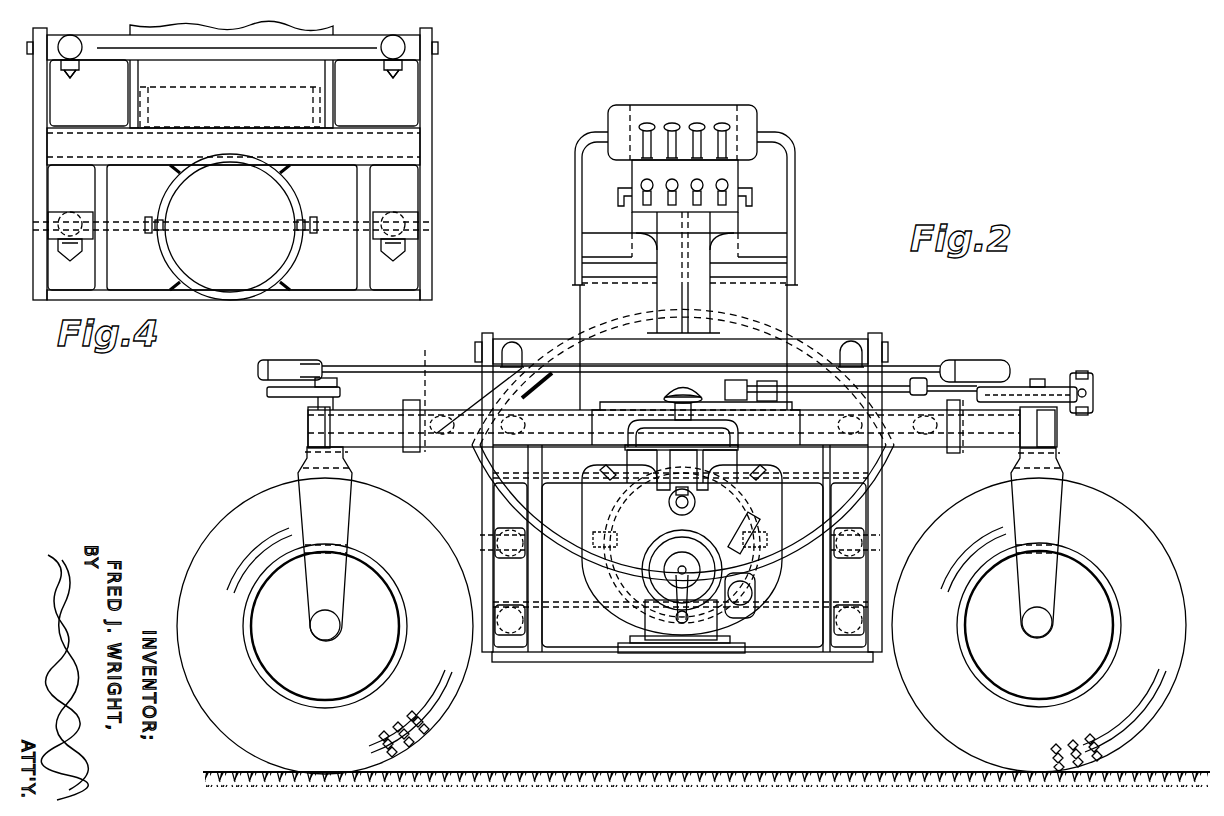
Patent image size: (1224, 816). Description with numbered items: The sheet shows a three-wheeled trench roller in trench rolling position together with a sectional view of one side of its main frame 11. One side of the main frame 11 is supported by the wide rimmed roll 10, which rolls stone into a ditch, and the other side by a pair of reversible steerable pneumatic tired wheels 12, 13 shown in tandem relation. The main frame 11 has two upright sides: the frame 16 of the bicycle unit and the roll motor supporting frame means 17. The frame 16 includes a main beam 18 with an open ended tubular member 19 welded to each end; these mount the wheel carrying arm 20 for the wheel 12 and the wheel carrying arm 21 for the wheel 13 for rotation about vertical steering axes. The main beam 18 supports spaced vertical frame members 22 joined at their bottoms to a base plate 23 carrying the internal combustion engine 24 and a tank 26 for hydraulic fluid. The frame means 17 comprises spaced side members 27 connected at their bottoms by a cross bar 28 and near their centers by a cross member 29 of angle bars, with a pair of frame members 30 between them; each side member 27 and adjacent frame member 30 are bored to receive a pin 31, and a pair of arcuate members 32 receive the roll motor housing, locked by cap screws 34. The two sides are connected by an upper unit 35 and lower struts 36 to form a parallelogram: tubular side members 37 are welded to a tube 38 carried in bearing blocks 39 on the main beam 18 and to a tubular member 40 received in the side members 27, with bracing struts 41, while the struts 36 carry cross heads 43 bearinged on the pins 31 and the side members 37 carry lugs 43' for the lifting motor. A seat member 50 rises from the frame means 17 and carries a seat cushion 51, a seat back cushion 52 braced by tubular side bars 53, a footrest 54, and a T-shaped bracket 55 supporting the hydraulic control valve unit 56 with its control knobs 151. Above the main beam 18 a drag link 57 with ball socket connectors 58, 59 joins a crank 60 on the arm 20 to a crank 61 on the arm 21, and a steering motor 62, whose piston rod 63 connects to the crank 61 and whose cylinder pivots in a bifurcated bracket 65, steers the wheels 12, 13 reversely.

In FIG. 2, the wide rimmed roll 10 is at (458, 474).
In FIG. 2, the main frame 11 is at (1062, 428).
In FIG. 2, the pneumatic tired wheel 12 is at (325, 626).
In FIG. 2, the pneumatic tired wheel 13 is at (1039, 625).
In FIG. 2, the frame of the bicycle unit 16 is at (917, 450).
In FIG. 4, the roll motor supporting frame means 17 is at (440, 141).
In FIG. 2, the main beam 18 is at (377, 422).
In FIG. 2, the open ended tubular member 19 is at (322, 428).
In FIG. 2, the wheel carrying arm 20 is at (325, 544).
In FIG. 2, the wheel carrying arm 21 is at (1037, 543).
In FIG. 2, the vertical frame member 22 is at (680, 565).
In FIG. 2, the base plate 23 is at (690, 662).
In FIG. 2, the internal combustion engine 24 is at (770, 503).
In FIG. 2, the tank for hydraulic fluid 26 is at (768, 587).
In FIG. 4, the side member 27 is at (430, 201).
In FIG. 2, the side member 27 is at (487, 342).
In FIG. 4, the cross bar 28 is at (226, 297).
In FIG. 4, the cross member 29 is at (233, 146).
In FIG. 4, the frame member 30 is at (103, 264).
In FIG. 4, the pin 31 is at (106, 228).
In FIG. 4, the arcuate member 32 is at (290, 210).
In FIG. 4, the cap screw 34 is at (147, 220).
In FIG. 2, the upper unit 35 is at (826, 331).
In FIG. 4, the lower strut 36 is at (63, 258).
In FIG. 2, the lower strut 36 is at (538, 583).
In FIG. 4, the tubular side member 37 is at (80, 64).
In FIG. 2, the tubular side member 37 is at (512, 340).
In FIG. 2, the tube 38 is at (687, 393).
In FIG. 2, the bearing block 39 is at (410, 402).
In FIG. 4, the tubular member 40 is at (336, 37).
In FIG. 2, the tubular member 40 is at (540, 343).
In FIG. 2, the tubular bracing strut 41 is at (472, 407).
In FIG. 4, the cross head 43 is at (233, 227).
In FIG. 4, the downwardly extending bracket 43' is at (234, 87).
In FIG. 4, the seat member 50 is at (231, 74).
In FIG. 2, the seat member 50 is at (593, 293).
In FIG. 2, the seat cushion 51 is at (775, 243).
In FIG. 2, the seat back cushion 52 is at (750, 118).
In FIG. 2, the tubular side bar 53 is at (576, 191).
In FIG. 4, the operator's footrest 54 is at (302, 90).
In FIG. 2, the operator's footrest 54 is at (630, 405).
In FIG. 2, the bracket 55 is at (700, 272).
In FIG. 2, the hydraulic control valve unit 56 is at (624, 174).
In FIG. 2, the drag link 57 is at (333, 366).
In FIG. 2, the ball socket connector 58 is at (273, 362).
In FIG. 2, the ball socket connector 59 is at (998, 365).
In FIG. 2, the lever or crank 60 is at (285, 393).
In FIG. 2, the lever or crank 61 is at (1066, 380).
In FIG. 2, the steering motor 62 is at (896, 386).
In FIG. 2, the piston rod 63 is at (1011, 389).
In FIG. 2, the bifurcated bracket 65 is at (713, 385).
In FIG. 2, the control knob 151 is at (643, 140).